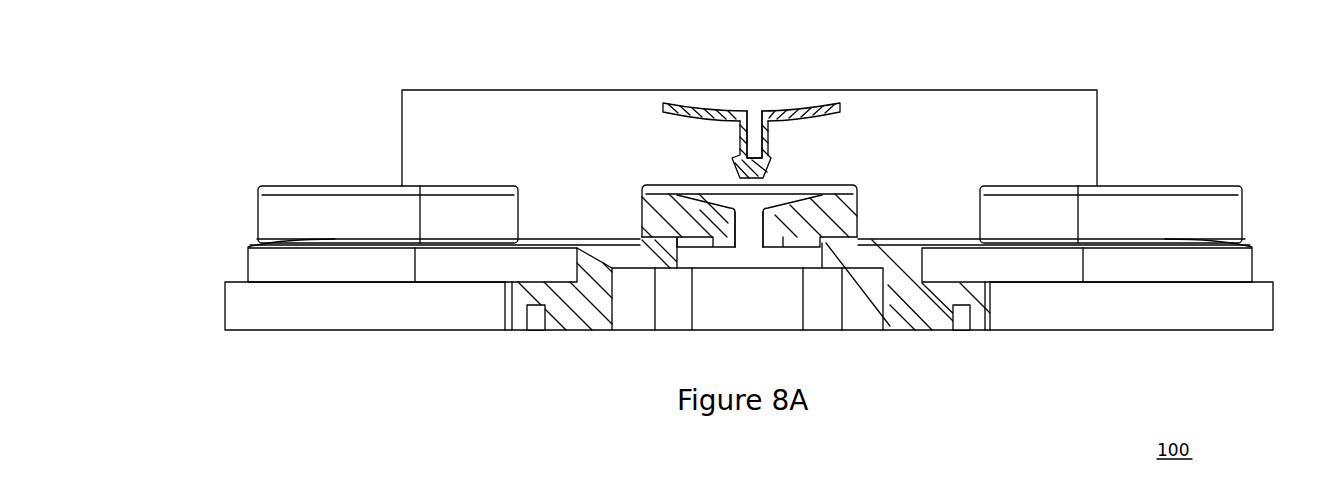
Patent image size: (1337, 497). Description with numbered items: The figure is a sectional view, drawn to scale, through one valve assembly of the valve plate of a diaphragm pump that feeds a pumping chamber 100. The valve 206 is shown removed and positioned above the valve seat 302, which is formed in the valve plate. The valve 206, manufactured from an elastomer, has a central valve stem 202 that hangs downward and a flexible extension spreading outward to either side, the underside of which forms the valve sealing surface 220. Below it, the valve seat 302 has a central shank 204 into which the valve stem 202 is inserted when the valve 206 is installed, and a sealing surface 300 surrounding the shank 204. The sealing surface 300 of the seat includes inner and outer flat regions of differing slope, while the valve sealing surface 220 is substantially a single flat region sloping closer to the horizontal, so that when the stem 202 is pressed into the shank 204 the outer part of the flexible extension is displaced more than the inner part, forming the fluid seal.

The pumping chamber 100 is at (763, 314).
The valve stem 202 is at (737, 143).
The central shank 204 is at (773, 220).
The valve 206 is at (750, 108).
The valve sealing surface 220 is at (800, 119).
The sealing surface of the valve seat 300 is at (753, 199).
The valve seat 302 is at (860, 200).